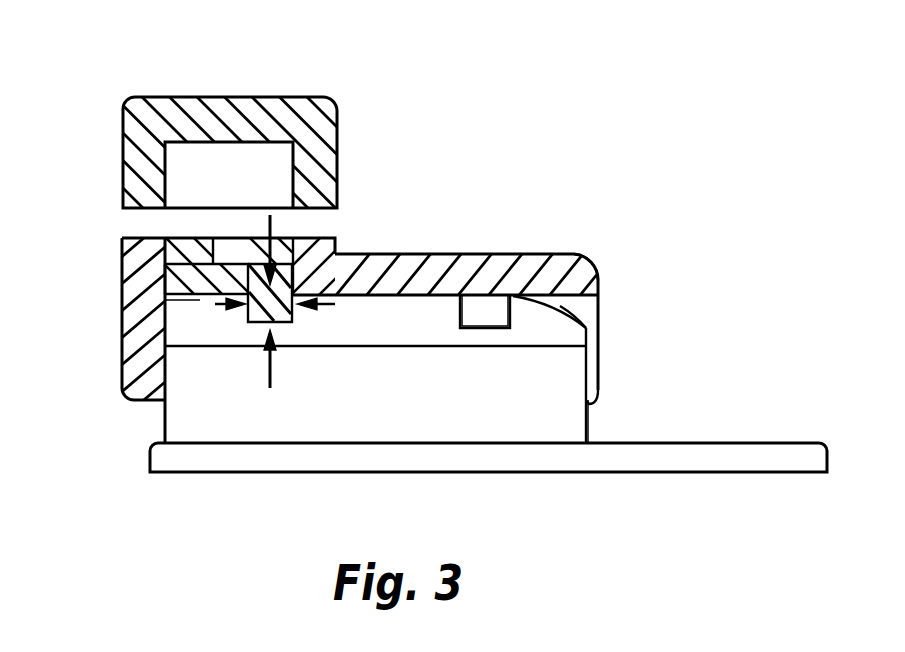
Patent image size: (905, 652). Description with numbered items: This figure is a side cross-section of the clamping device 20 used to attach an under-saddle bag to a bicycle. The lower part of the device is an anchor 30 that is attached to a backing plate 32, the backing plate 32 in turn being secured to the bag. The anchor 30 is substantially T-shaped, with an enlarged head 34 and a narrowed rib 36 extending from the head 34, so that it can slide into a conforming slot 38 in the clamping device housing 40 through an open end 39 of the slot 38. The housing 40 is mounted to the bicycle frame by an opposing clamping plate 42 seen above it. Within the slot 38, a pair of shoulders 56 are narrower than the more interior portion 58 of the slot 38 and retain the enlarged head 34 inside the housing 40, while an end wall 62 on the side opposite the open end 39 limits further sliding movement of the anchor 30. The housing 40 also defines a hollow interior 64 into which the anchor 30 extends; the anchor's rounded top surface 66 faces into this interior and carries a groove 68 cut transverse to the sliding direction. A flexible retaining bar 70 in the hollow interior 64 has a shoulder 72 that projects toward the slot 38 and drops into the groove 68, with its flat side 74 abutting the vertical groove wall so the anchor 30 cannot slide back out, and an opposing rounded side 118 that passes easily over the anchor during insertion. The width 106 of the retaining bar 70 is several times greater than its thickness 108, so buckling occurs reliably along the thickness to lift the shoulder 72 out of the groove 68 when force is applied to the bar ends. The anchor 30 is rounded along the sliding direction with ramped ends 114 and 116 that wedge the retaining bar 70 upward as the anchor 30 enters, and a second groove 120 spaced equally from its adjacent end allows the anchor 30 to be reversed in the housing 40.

The clamping device 20 is at (282, 84).
The anchor 30 is at (420, 412).
The backing plate 32 is at (720, 453).
The enlarged head 34 is at (436, 272).
The narrowed rib 36 is at (553, 438).
The slot 38 is at (572, 416).
The open end 39 is at (603, 298).
The clamping device housing 40 is at (612, 246).
The clamping plate 42 is at (328, 108).
The shoulders 56 is at (590, 366).
The interior portion 58 is at (545, 318).
The end wall 62 is at (243, 292).
The hollow interior 64 is at (147, 278).
The top surface 66 is at (448, 300).
The groove 68 is at (232, 256).
The retaining bar 70 is at (189, 332).
The shoulder 72 is at (253, 350).
The flat side 74 is at (234, 348).
The width 106 is at (373, 253).
The thickness 108 is at (296, 241).
The ramped end 114 is at (188, 273).
The ramped end 116 is at (590, 290).
The rounded side 118 is at (292, 325).
The second groove 120 is at (490, 303).